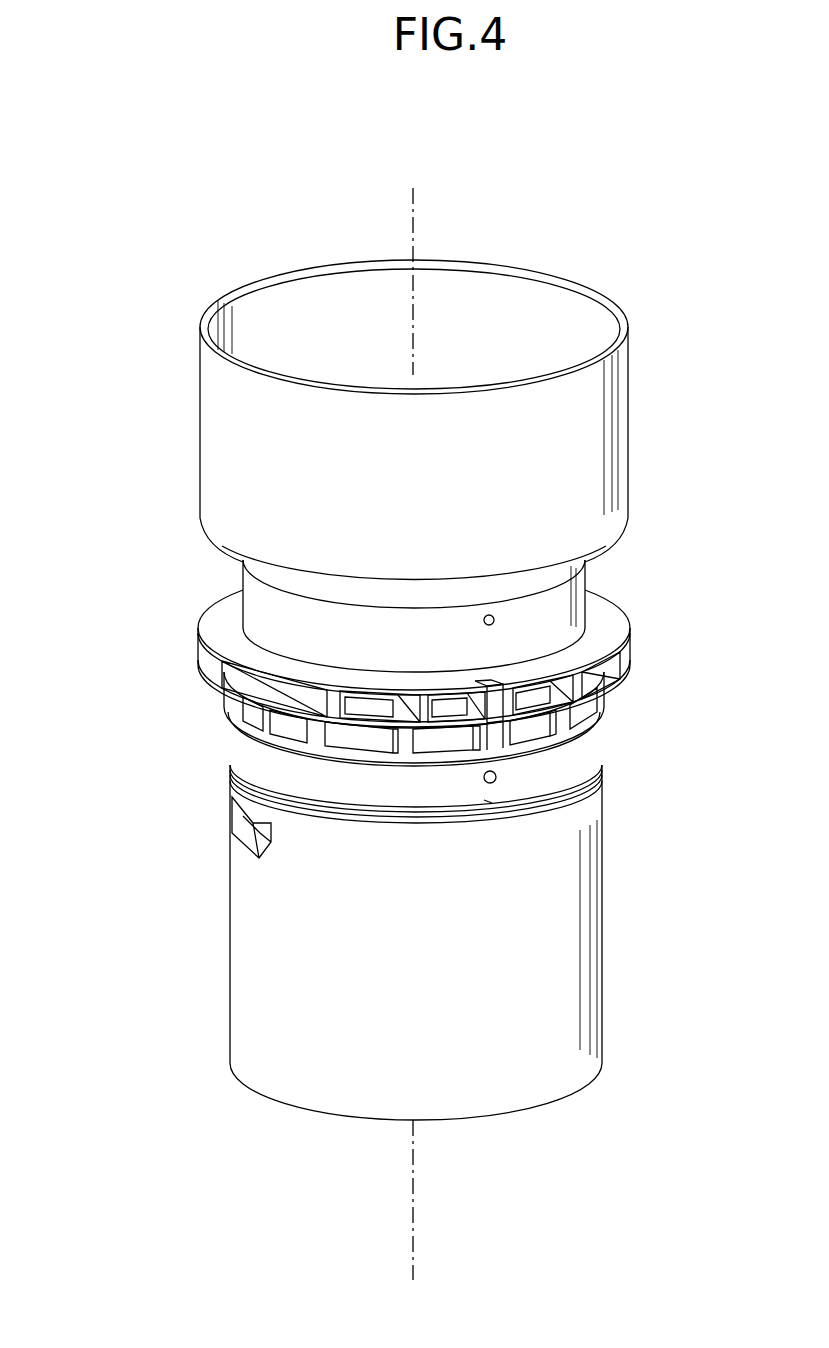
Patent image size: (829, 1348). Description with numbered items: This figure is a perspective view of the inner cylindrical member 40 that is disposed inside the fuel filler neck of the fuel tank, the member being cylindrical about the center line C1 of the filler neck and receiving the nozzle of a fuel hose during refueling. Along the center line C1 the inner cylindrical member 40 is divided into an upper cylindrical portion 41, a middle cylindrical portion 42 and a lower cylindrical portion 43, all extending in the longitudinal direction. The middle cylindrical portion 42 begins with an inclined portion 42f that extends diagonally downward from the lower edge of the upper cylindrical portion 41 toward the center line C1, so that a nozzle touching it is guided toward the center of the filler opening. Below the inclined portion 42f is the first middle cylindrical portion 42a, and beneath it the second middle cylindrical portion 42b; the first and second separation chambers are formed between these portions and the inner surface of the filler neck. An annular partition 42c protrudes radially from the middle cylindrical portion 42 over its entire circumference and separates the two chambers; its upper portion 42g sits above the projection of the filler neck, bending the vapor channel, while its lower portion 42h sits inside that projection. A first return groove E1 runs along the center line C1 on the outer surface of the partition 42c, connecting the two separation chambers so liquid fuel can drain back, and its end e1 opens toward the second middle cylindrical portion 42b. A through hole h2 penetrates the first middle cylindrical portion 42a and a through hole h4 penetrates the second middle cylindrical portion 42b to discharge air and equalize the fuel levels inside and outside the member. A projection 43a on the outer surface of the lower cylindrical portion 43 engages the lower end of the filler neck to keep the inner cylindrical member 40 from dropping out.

The inner cylindrical member 40 is at (553, 213).
The upper cylindrical portion 41 is at (629, 323).
The middle cylindrical portion 42 is at (629, 518).
The lower cylindrical portion 43 is at (629, 754).
The first middle cylindrical portion 42a is at (247, 597).
The second middle cylindrical portion 42b is at (244, 742).
The partition 42c is at (206, 697).
The inclined portion 42f is at (353, 594).
The upper portion of the partition 42g is at (196, 620).
The lower portion of the partition 42h is at (238, 708).
The projection 43a is at (236, 812).
The through hole h2 is at (489, 615).
The through hole h4 is at (490, 784).
The first return groove E1 is at (503, 735).
The end of the first return groove e1 is at (492, 803).
The center line C1 is at (415, 718).